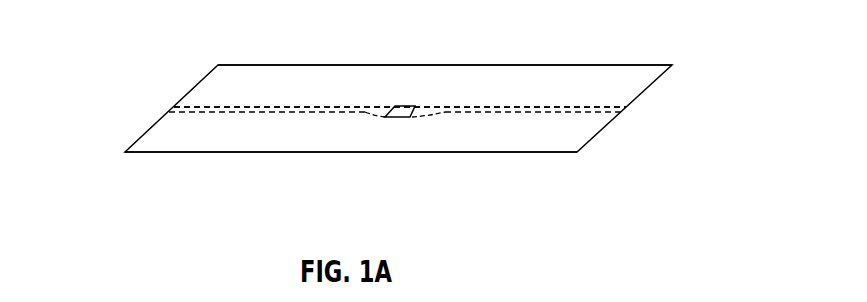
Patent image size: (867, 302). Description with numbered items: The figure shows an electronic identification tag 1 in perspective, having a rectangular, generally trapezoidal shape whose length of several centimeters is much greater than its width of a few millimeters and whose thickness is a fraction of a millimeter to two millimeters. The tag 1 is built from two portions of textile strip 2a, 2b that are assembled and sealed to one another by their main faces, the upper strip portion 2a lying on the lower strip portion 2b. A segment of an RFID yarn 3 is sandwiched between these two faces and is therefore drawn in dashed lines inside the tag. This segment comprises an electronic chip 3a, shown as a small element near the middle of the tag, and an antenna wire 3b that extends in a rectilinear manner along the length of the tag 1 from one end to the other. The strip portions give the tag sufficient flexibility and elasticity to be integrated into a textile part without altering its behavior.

The electronic identification tag 1 is at (682, 120).
The textile strip portion 2a is at (278, 82).
The textile strip portion 2b is at (230, 181).
The RFID yarn 3 is at (533, 112).
The electronic chip 3a is at (402, 108).
The antenna wire 3b is at (513, 106).